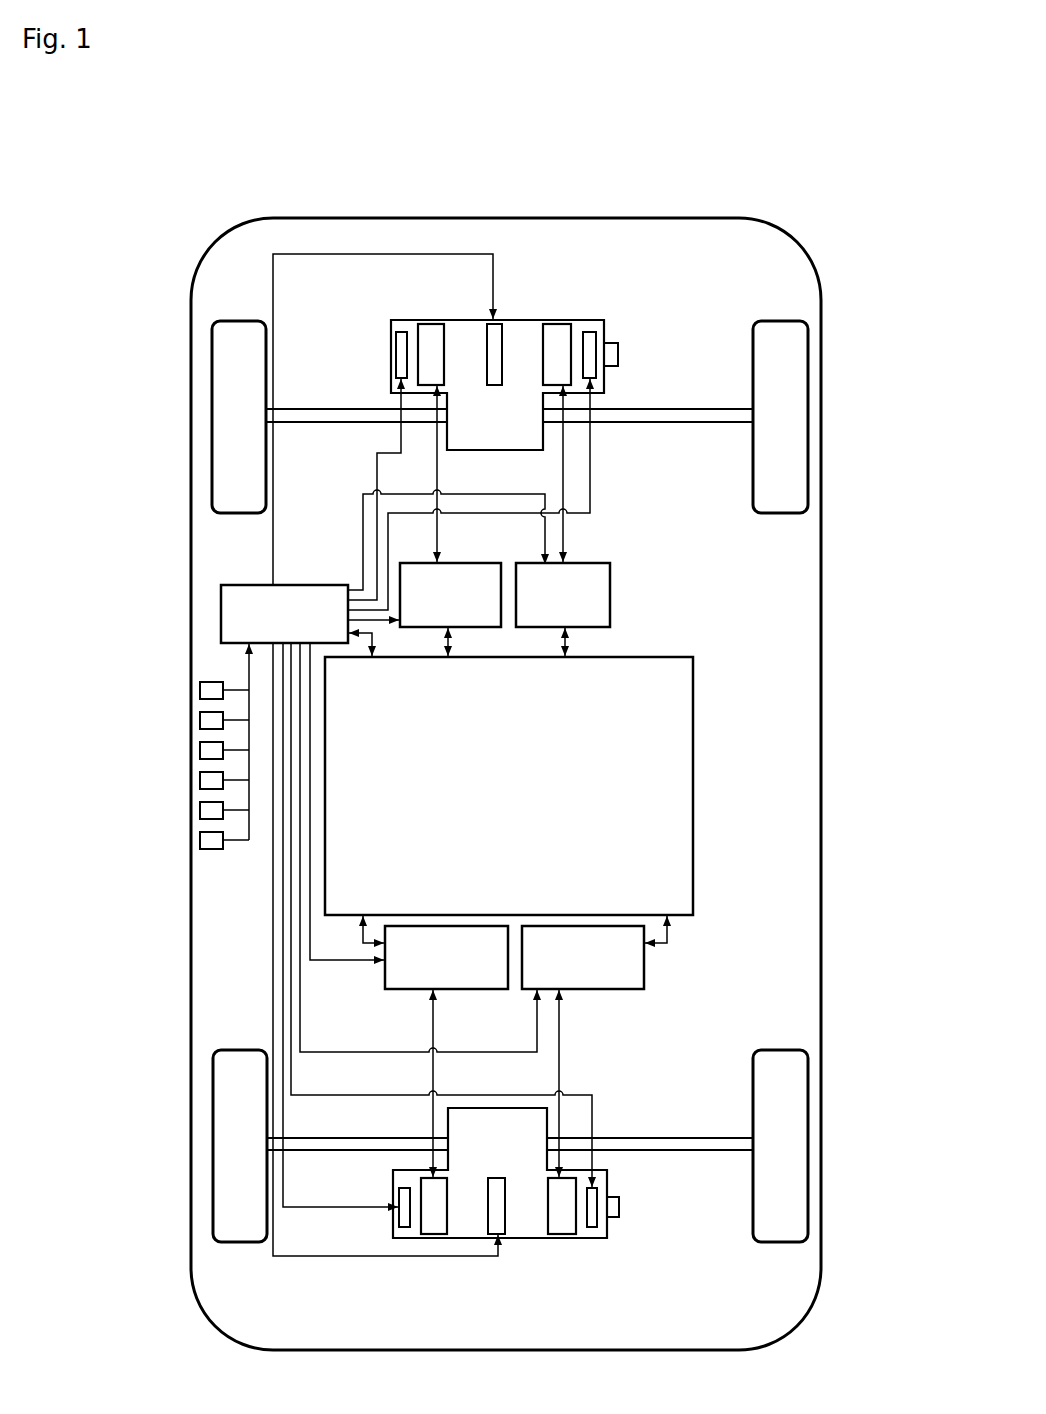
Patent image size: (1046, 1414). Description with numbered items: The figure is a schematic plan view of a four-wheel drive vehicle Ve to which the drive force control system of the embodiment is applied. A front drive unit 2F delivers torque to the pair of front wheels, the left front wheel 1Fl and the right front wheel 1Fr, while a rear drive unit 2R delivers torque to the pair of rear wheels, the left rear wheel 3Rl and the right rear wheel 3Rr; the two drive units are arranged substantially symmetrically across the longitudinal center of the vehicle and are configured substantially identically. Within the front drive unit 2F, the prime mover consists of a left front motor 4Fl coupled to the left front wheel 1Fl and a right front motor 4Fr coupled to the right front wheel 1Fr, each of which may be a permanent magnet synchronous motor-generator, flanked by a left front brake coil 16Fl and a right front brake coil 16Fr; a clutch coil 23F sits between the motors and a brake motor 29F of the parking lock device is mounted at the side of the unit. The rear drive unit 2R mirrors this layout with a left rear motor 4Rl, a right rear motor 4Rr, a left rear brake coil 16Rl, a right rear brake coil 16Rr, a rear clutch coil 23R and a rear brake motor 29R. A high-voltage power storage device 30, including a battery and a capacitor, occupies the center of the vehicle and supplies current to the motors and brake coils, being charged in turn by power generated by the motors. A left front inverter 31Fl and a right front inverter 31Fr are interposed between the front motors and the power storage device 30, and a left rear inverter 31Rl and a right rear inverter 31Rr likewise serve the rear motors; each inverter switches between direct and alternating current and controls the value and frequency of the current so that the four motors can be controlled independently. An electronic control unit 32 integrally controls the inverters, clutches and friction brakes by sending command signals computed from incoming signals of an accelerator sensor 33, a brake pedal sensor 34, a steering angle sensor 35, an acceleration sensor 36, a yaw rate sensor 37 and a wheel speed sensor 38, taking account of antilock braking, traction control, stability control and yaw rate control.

The vehicle Ve is at (797, 186).
The front drive unit 2F is at (515, 240).
The rear drive unit 2R is at (525, 1305).
The left front wheel 1Fl is at (222, 397).
The right front wheel 1Fr is at (808, 414).
The left rear wheel 3Rl is at (222, 1132).
The right rear wheel 3Rr is at (800, 1143).
The left front brake coil 16Fl is at (401, 330).
The left front motor 4Fl is at (432, 330).
The clutch coil 23F is at (492, 380).
The right front motor 4Fr is at (550, 334).
The right front brake coil 16Fr is at (587, 334).
The brake motor 29F is at (612, 346).
The left front inverter 31Fl is at (478, 577).
The right front inverter 31Fr is at (606, 577).
The power storage device 30 is at (684, 915).
The electronic control unit 32 is at (221, 617).
The accelerator sensor 33 is at (200, 690).
The brake pedal sensor 34 is at (200, 720).
The steering angle sensor 35 is at (200, 750).
The acceleration sensor 36 is at (200, 780).
The yaw rate sensor 37 is at (200, 810).
The wheel speed sensor 38 is at (200, 840).
The left rear inverter 31Rl is at (475, 981).
The right rear inverter 31Rr is at (604, 981).
The left rear brake coil 16Rl is at (405, 1230).
The left rear motor 4Rl is at (434, 1236).
The rear clutch coil 23R is at (501, 1181).
The right rear motor 4Rr is at (560, 1232).
The right rear brake coil 16Rr is at (597, 1230).
The rear brake motor 29R is at (612, 1212).